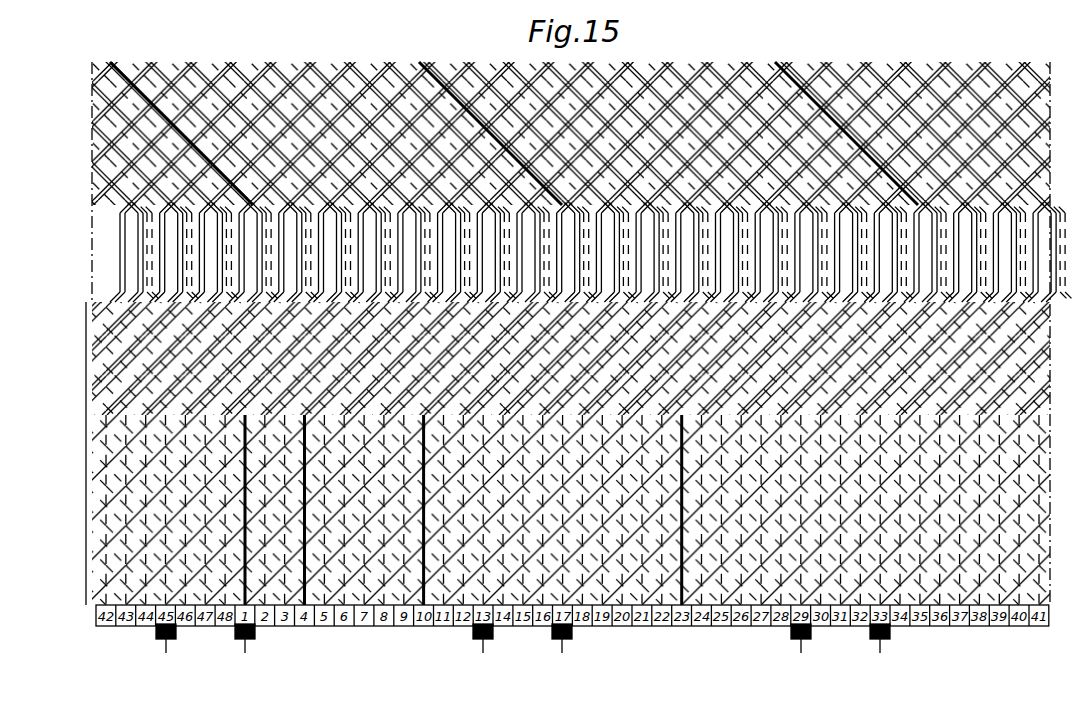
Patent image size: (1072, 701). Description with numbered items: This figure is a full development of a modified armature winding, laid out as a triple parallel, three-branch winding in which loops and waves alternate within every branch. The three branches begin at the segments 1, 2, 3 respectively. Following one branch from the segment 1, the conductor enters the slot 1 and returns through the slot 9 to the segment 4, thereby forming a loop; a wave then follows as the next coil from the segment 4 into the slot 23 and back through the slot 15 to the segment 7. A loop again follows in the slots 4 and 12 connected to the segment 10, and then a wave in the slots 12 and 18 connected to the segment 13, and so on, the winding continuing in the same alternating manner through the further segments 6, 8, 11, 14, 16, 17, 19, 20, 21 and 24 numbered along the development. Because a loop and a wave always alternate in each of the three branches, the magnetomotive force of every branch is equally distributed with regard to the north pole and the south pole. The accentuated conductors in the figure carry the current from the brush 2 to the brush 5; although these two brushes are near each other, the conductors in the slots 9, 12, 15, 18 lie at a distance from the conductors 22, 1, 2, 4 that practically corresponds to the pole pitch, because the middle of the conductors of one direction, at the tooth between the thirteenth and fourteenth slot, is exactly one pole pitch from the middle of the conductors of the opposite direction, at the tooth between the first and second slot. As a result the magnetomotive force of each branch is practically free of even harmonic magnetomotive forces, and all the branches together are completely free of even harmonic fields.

The segment 1 is at (157, 640).
The segment 2 is at (236, 640).
The segment 3 is at (201, 267).
The segment 4 is at (241, 267).
The brush 5 is at (474, 640).
The coil 6 / terminal lead 6 is at (553, 640).
The segment 7 is at (360, 267).
The coil 8 is at (400, 267).
The slot 9 is at (792, 640).
The segment 10 is at (871, 640).
The coil 11 is at (519, 267).
The slot 12 is at (559, 267).
The segment 13 is at (598, 267).
The coil 14 is at (638, 267).
The slot 15 is at (678, 267).
The coil 16 is at (717, 267).
The coil 17 is at (757, 267).
The slot 18 is at (797, 267).
The coil 19 is at (837, 267).
The coil 20 is at (876, 267).
The coil 21 is at (916, 267).
The conductor 22 is at (956, 267).
The slot 23 is at (995, 267).
The coil 24 is at (1036, 267).